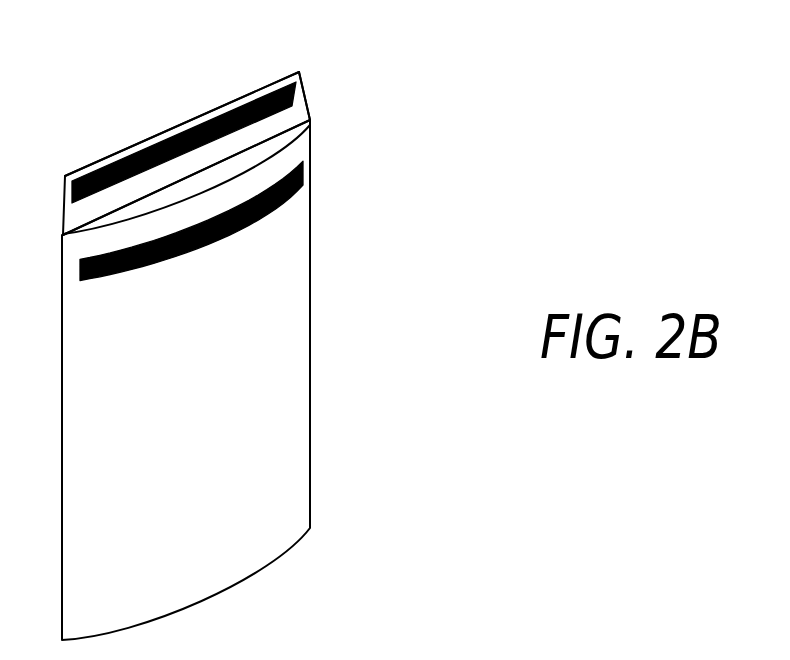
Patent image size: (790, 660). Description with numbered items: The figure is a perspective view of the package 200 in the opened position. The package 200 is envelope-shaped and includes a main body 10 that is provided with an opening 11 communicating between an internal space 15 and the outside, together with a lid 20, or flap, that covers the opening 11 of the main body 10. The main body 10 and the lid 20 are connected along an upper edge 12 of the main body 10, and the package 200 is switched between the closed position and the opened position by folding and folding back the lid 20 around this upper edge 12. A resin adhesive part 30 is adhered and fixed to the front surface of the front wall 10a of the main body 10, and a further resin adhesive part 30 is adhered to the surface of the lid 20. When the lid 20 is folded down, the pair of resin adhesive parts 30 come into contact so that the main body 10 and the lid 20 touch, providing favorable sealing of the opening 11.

The main body 10 is at (280, 348).
The front wall 10a is at (238, 443).
The opening 11 is at (186, 192).
The upper edge 12 is at (282, 130).
The internal space 15 is at (117, 223).
The lid 20 is at (108, 165).
The resin adhesive part 30 is at (282, 90).
The package 200 is at (402, 123).